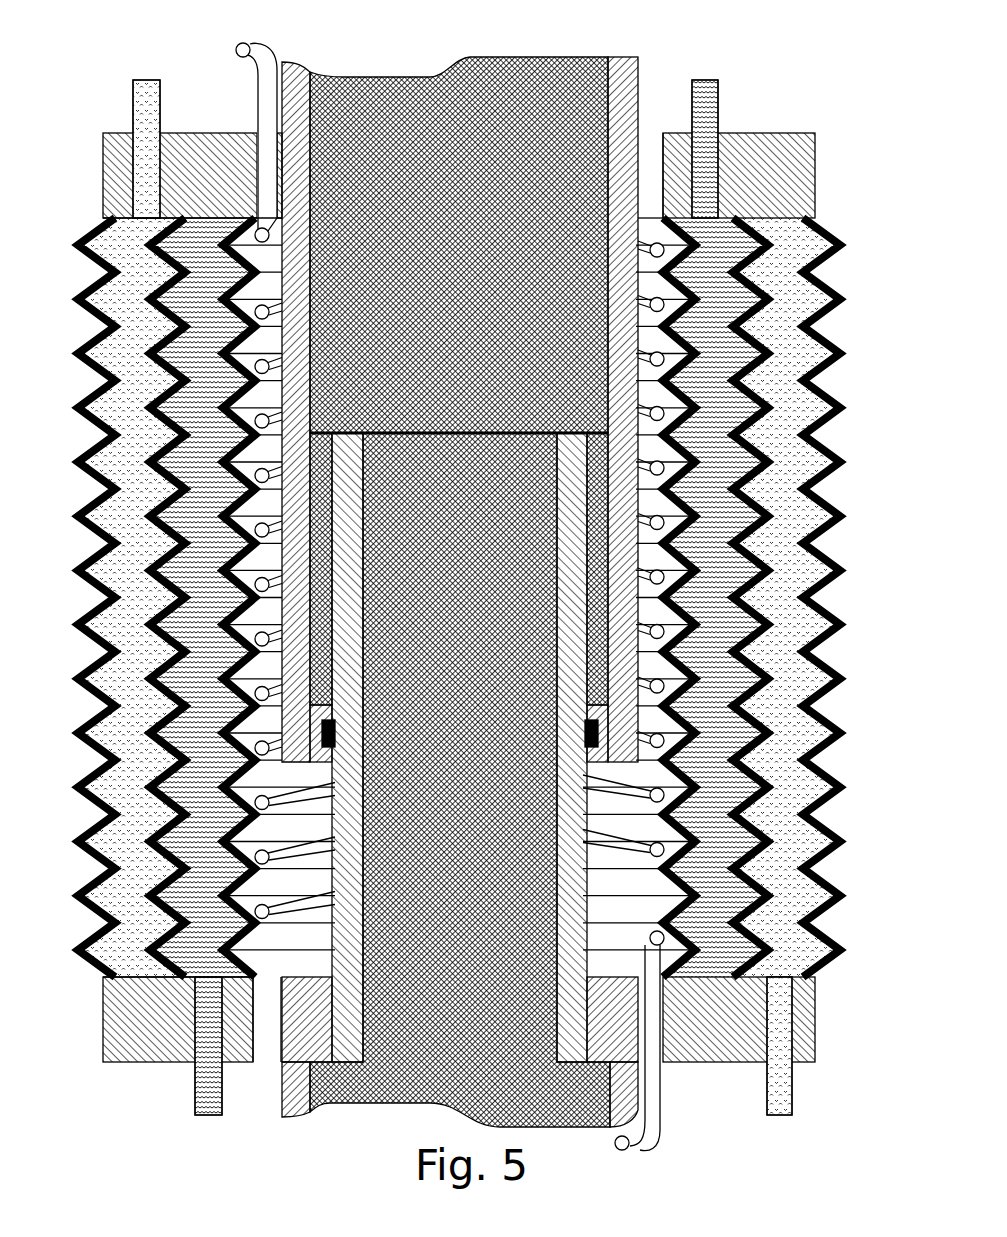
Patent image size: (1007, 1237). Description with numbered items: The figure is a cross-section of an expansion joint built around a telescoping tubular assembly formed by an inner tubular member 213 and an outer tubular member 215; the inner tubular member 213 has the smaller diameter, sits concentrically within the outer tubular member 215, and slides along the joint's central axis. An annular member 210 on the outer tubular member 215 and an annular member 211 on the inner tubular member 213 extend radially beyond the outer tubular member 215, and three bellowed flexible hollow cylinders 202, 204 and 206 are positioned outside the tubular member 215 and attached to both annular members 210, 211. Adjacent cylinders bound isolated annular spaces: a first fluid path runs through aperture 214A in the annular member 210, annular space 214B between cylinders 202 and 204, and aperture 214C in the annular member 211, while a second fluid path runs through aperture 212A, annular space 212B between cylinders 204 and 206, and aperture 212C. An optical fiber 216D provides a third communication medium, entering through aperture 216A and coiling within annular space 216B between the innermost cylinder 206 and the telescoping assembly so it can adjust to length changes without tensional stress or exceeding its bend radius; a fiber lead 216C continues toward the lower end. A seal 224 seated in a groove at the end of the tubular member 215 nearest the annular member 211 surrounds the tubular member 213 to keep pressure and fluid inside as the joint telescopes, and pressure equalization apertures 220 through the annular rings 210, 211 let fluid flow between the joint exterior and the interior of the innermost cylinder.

The flexible hollow cylinder 202 is at (838, 243).
The flexible hollow cylinder 204 is at (800, 405).
The flexible hollow cylinder 206 is at (760, 565).
The annular member 210 is at (815, 172).
The annular member 211 is at (815, 1035).
The aperture 212A is at (705, 80).
The annular space 212B is at (200, 685).
The aperture 212C is at (200, 1115).
The tubular member 213 is at (585, 945).
The aperture 214A is at (146, 80).
The annular space 214B is at (135, 612).
The aperture 214C is at (775, 1115).
The tubular member 215 is at (638, 80).
The aperture 216A is at (257, 133).
The annular space 216B is at (283, 938).
The lower lead wire 216C is at (660, 1062).
The optical fiber 216D is at (262, 50).
The pressure equalization aperture 220 is at (655, 130).
The seal 224 is at (322, 737).